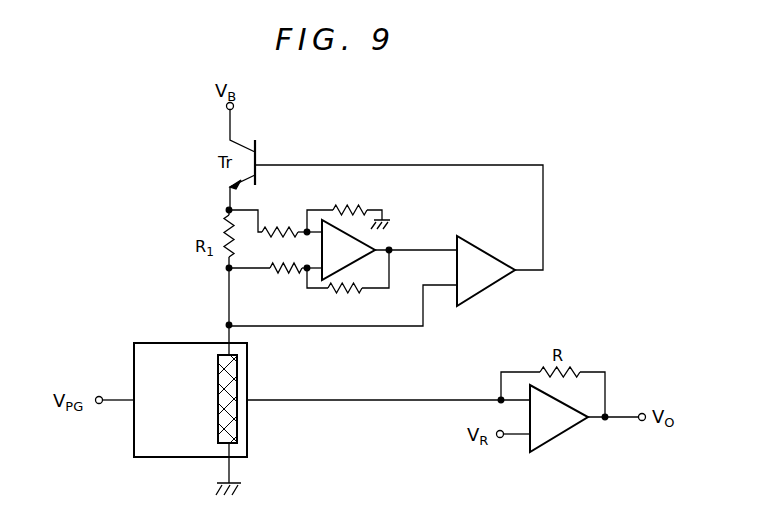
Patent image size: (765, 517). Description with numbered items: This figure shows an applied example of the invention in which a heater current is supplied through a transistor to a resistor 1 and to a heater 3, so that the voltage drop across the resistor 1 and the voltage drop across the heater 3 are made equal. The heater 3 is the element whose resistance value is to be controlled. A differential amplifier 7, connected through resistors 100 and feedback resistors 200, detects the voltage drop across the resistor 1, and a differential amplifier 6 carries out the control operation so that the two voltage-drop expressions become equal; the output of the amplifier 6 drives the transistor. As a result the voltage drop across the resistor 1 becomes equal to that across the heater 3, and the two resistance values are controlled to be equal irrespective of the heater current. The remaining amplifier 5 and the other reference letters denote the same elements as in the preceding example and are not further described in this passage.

The resistor R1 1 is at (148, 356).
The heater 3 is at (237, 425).
The operational amplifier A5 5 is at (584, 418).
The differential amplifier A6 6 is at (372, 281).
The differential amplifier A7 7 is at (389, 250).
The resistor R100 100 is at (275, 250).
The resistor R200 200 is at (348, 252).